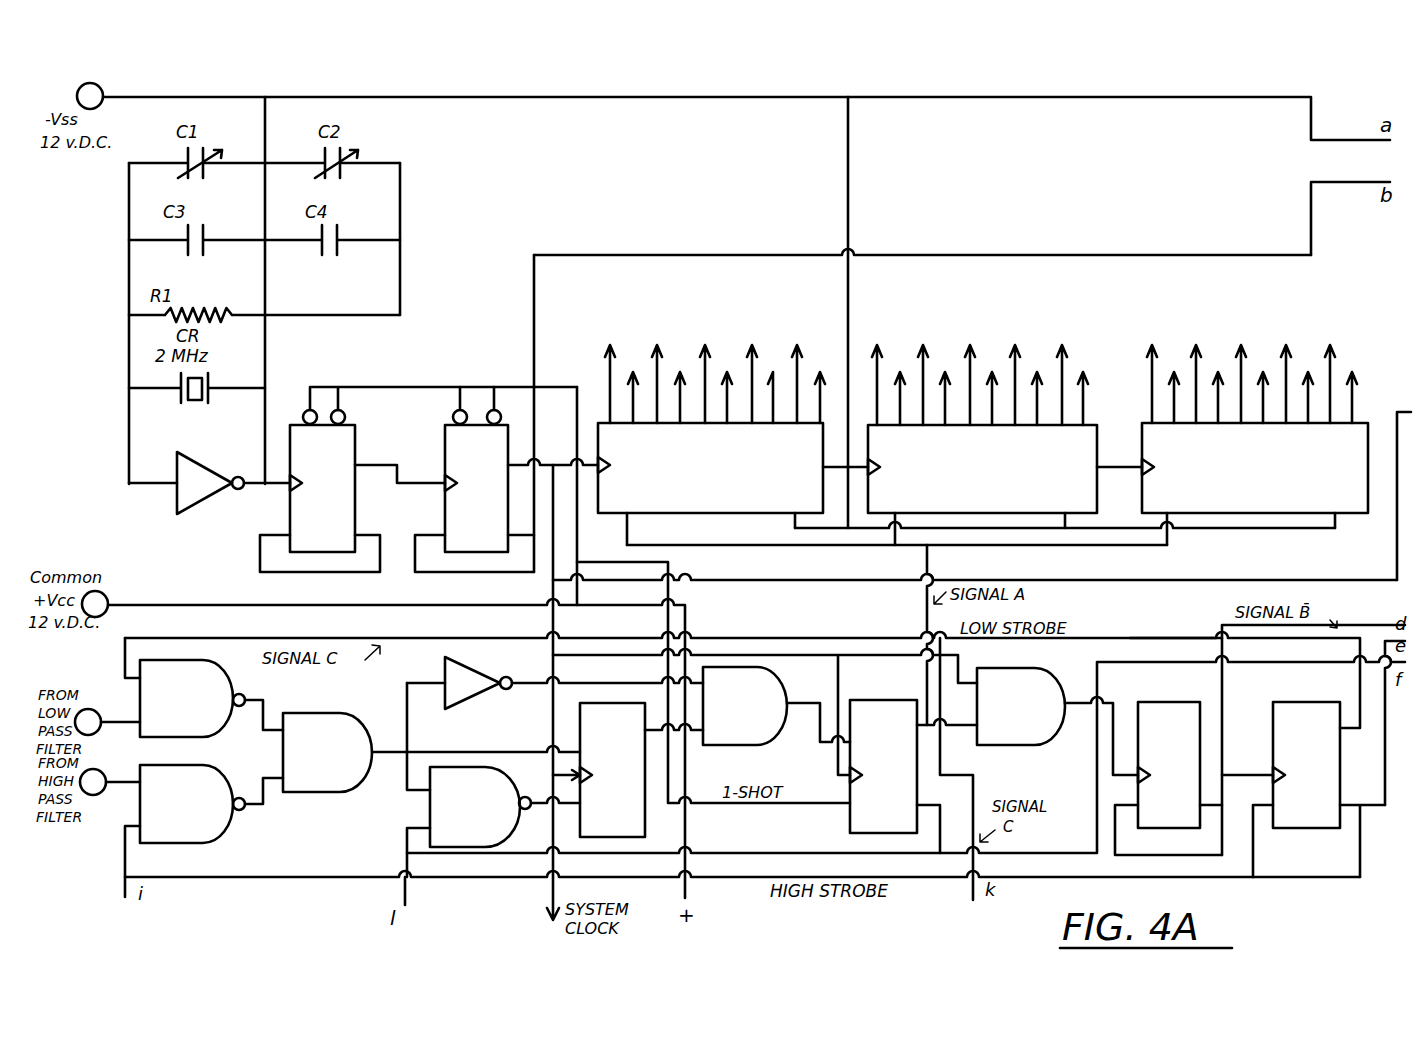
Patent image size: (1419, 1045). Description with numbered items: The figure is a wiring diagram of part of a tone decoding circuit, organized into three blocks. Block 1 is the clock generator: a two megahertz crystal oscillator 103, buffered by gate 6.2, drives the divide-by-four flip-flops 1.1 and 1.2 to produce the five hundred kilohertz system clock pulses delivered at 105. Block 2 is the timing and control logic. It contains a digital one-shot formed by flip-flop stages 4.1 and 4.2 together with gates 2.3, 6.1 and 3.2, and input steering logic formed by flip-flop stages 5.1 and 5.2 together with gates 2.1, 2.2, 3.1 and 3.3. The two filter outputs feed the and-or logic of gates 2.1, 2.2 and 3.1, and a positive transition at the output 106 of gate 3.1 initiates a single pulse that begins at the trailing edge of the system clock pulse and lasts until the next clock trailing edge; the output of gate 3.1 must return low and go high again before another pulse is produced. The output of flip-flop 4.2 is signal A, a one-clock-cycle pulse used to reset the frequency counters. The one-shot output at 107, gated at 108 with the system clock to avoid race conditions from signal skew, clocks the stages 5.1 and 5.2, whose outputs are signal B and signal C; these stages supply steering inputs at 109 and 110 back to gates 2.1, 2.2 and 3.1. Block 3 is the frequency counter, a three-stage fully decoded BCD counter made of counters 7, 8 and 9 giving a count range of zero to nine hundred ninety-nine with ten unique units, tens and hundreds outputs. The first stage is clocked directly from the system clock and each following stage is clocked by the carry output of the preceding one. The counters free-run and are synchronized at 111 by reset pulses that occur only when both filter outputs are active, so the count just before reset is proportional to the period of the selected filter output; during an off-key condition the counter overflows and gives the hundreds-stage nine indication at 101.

The block 1 is at (410, 362).
The block 2 is at (852, 634).
The block 3 is at (1010, 312).
The BCD counter 7 is at (733, 435).
The BCD counter 8 is at (1005, 435).
The BCD counter 9 is at (1255, 435).
The 9H indication output 101 is at (1358, 403).
The crystal oscillator 103 is at (250, 422).
The system clock output 105 is at (554, 463).
The output of gate 3.1 106 is at (389, 748).
The 1-shot output 107 is at (1123, 693).
The gating point 108 is at (960, 669).
The steering input 109 is at (1130, 641).
The steering input 110 is at (1268, 880).
The reset synchronization point 111 is at (932, 576).
The divide-by-four flip-flop 1.1 is at (418, 479).
The divide-by-four flip-flop 1.2 is at (506, 479).
The gate 2.1 is at (179, 687).
The gate 2.2 is at (181, 831).
The gate 2.3 is at (505, 807).
The gate 3.1 is at (327, 752).
The gate 3.2 is at (776, 706).
The gate 3.3 is at (1021, 706).
The flip-flop stage 4.1 is at (641, 770).
The flip-flop stage 4.2 is at (913, 776).
The flip-flop stage 5.1 is at (1168, 778).
The flip-flop stage 5.2 is at (1303, 789).
The gate 6.1 is at (555, 683).
The gate 6.2 is at (209, 483).